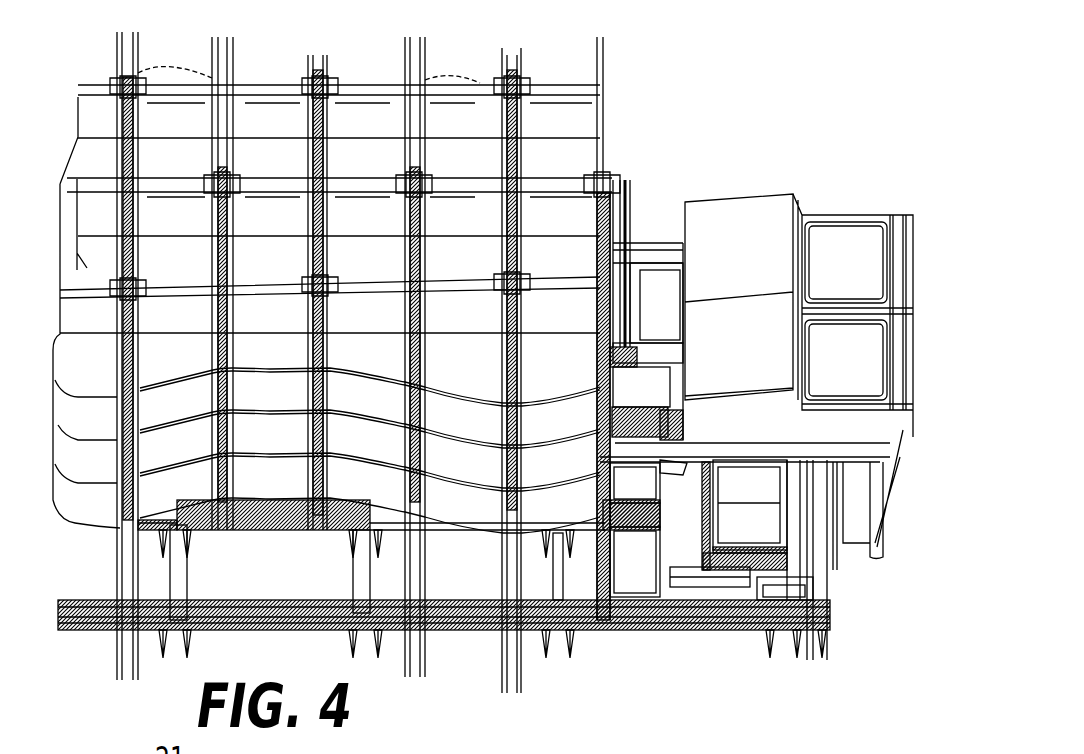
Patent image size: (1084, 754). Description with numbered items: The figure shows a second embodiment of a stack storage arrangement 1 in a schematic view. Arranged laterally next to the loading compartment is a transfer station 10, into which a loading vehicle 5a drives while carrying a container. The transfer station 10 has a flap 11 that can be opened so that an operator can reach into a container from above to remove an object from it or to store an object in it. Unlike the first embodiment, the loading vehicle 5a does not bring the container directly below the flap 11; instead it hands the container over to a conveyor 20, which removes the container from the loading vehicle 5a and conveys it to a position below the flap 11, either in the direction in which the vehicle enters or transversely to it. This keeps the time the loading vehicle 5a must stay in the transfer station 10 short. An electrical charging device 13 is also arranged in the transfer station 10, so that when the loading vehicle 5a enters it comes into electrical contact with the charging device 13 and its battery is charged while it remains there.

The stack storage arrangement 1 is at (775, 88).
The loading vehicle 5a is at (712, 582).
The transfer station 10 is at (775, 645).
The flap 11 is at (853, 350).
The electrical charging device 13 is at (792, 592).
The conveyor 20 is at (673, 467).